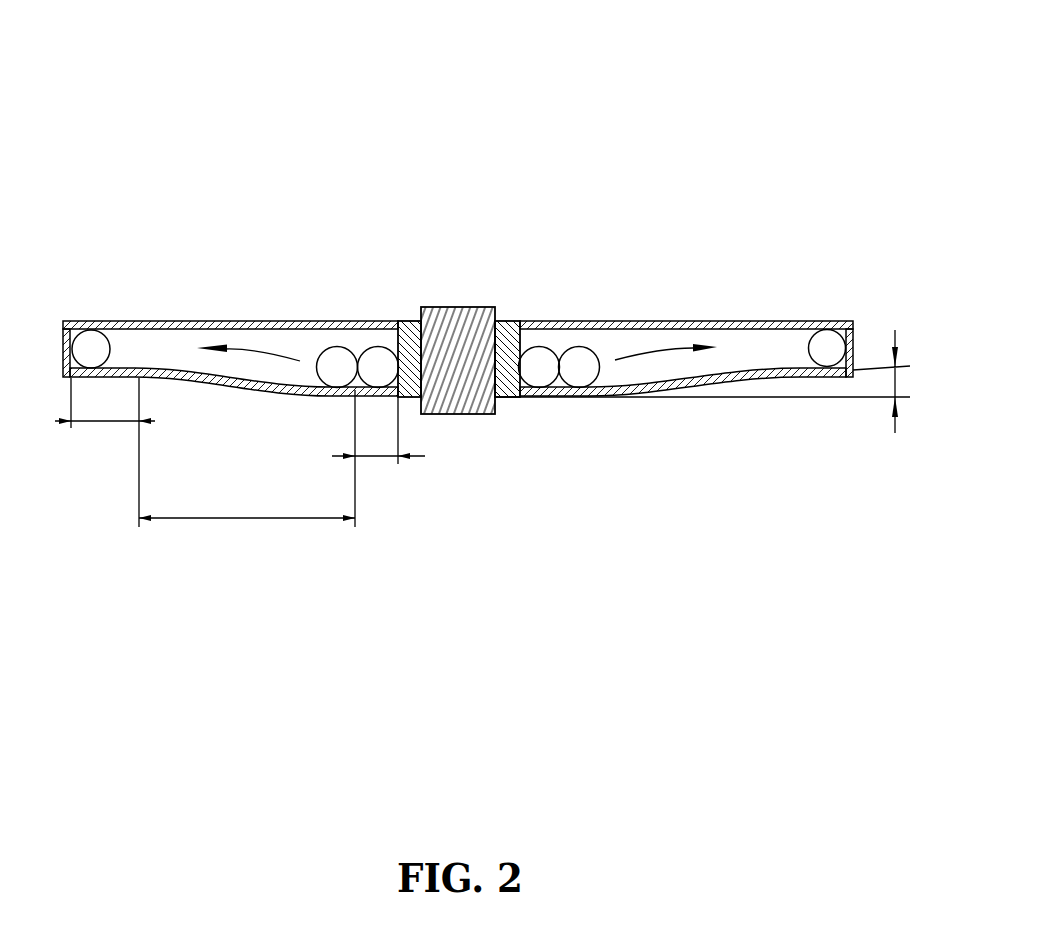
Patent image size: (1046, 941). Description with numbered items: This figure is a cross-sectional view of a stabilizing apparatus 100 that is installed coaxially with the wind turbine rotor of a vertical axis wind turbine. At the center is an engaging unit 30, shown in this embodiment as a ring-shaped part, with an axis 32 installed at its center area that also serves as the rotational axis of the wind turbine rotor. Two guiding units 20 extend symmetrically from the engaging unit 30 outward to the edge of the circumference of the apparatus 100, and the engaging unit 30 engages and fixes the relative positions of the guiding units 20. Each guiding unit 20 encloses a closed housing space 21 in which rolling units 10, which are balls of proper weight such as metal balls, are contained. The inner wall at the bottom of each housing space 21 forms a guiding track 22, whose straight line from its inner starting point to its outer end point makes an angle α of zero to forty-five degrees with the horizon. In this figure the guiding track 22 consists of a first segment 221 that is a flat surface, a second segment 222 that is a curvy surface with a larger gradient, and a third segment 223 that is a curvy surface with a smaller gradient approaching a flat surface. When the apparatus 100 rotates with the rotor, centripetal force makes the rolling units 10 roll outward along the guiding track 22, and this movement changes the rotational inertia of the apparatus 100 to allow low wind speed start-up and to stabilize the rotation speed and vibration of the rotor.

The apparatus 100 is at (632, 165).
The rolling unit 10 is at (377, 367).
The guiding unit 20 is at (458, 253).
The housing space 21 is at (275, 343).
The guiding track 22 is at (168, 372).
The first segment 221 is at (378, 446).
The second segment 222 is at (247, 458).
The third segment 223 is at (105, 452).
The engaging unit 30 is at (513, 397).
The axis 32 is at (472, 414).